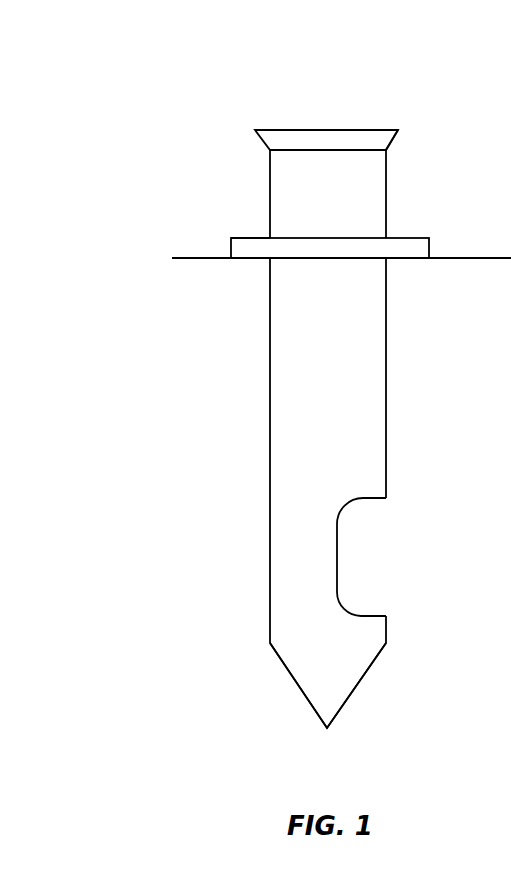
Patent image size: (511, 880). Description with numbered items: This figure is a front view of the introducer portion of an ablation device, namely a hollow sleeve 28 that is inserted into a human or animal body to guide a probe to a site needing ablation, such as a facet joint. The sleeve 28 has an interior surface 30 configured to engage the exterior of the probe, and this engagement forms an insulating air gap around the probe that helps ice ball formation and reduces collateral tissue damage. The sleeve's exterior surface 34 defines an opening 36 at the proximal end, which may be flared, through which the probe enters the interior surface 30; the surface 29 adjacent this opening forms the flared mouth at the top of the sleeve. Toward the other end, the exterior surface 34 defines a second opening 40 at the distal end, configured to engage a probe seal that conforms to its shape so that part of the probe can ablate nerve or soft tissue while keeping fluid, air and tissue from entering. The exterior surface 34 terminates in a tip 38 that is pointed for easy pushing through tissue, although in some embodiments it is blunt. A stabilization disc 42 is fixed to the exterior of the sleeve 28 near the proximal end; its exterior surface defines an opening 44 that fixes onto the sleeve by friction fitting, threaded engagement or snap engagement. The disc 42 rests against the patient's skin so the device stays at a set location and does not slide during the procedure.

The sleeve 28 is at (183, 160).
The interior surface 30 is at (311, 106).
The opening 36 is at (347, 128).
The tapered side of head 29 is at (395, 136).
The exterior surface 34 is at (288, 350).
The opening 40 is at (337, 560).
The tip 38 is at (323, 726).
The stabilization disc 42 is at (402, 237).
The opening 44 is at (266, 236).